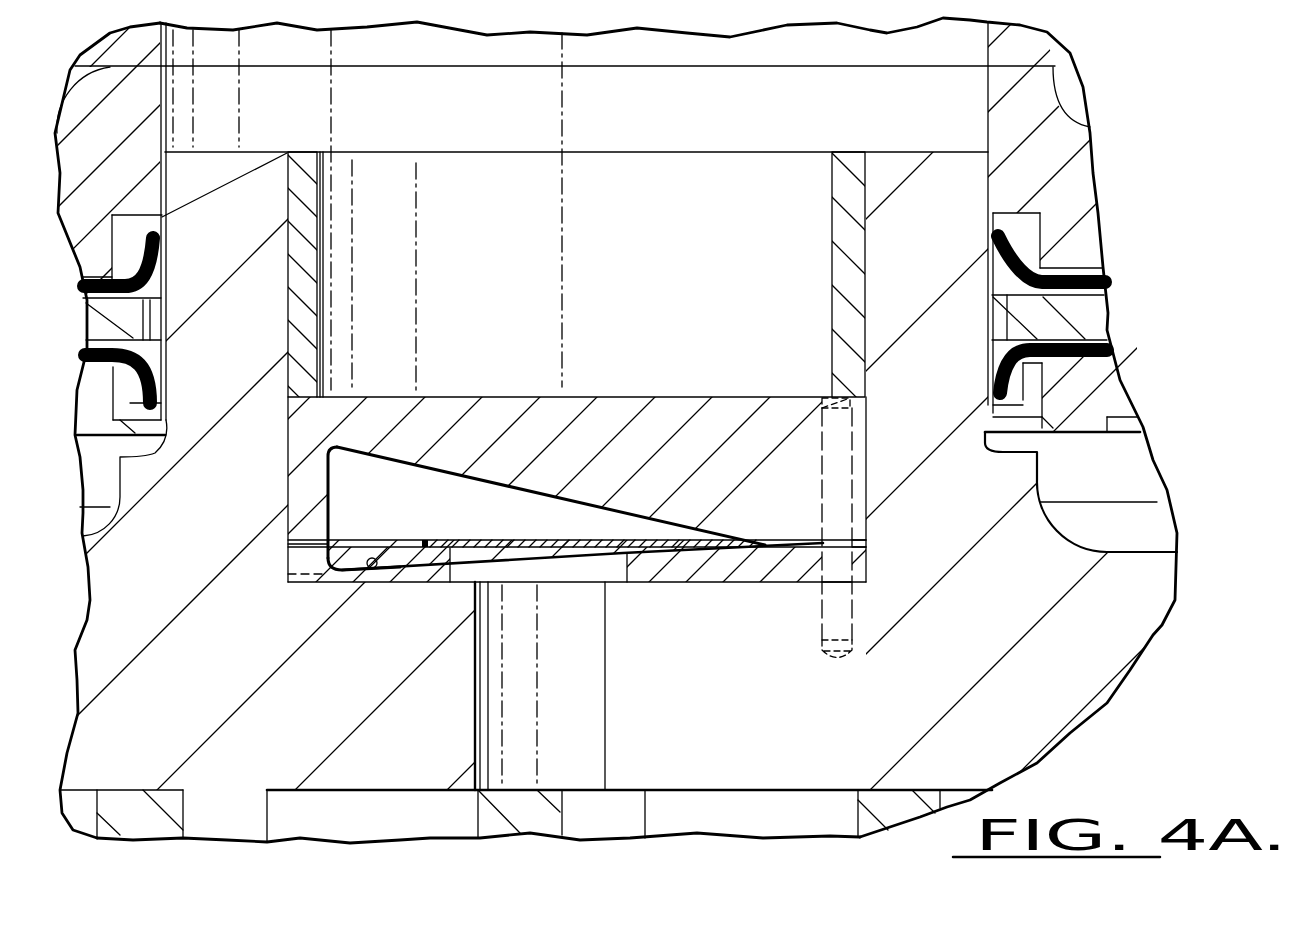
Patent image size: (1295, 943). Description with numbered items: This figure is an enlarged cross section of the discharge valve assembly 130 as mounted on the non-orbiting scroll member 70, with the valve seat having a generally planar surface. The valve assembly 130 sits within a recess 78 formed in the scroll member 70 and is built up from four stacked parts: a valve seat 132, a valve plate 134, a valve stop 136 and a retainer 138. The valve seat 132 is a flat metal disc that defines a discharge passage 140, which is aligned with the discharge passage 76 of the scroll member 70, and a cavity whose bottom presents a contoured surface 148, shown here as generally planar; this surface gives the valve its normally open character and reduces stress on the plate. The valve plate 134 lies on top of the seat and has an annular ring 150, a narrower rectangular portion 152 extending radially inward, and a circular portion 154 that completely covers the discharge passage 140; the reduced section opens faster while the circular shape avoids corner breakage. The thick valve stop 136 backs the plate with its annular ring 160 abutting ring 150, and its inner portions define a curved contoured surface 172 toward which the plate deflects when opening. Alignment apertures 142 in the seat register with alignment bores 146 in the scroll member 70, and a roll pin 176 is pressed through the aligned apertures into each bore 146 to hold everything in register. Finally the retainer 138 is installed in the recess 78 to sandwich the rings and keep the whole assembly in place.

The non-orbiting scroll member 70 is at (1130, 606).
The discharge passage 76 is at (567, 757).
The recess 78 is at (290, 188).
The discharge valve assembly 130 is at (683, 180).
The valve seat 132 is at (883, 545).
The valve plate 134 is at (460, 550).
The valve stop 136 is at (615, 397).
The retainer 138 is at (303, 236).
The discharge passage 140 is at (607, 570).
The alignment apertures 142 is at (827, 580).
The alignment bores 146 is at (840, 537).
The contoured surface 148 is at (370, 565).
The annular ring 150 is at (305, 542).
The rectangular portion 152 is at (677, 538).
The circular portion 154 is at (433, 537).
The annular ring 160 is at (305, 468).
The curved contoured surface 172 is at (437, 477).
The roll pin 176 is at (867, 413).